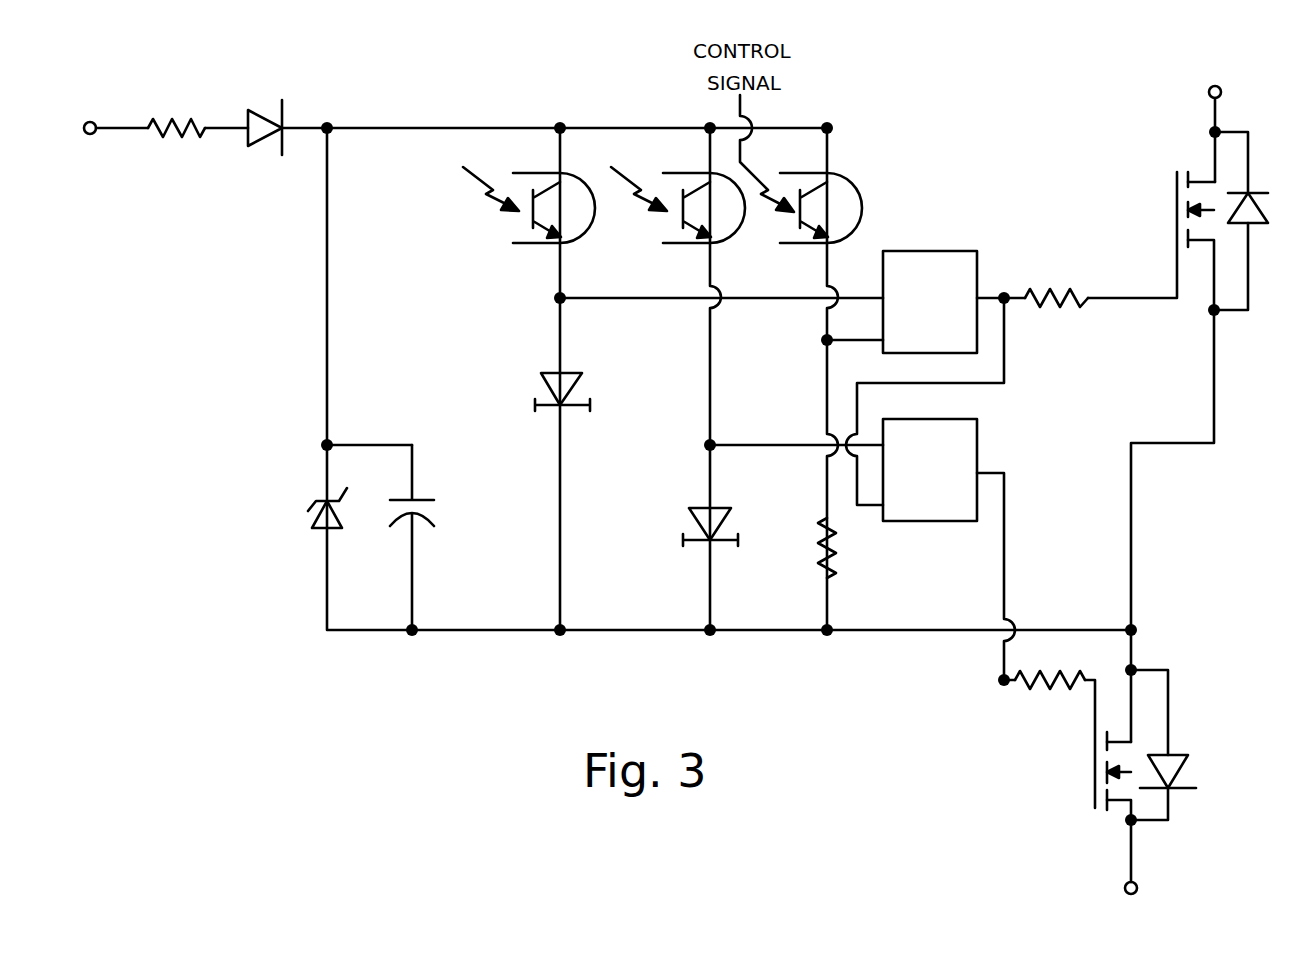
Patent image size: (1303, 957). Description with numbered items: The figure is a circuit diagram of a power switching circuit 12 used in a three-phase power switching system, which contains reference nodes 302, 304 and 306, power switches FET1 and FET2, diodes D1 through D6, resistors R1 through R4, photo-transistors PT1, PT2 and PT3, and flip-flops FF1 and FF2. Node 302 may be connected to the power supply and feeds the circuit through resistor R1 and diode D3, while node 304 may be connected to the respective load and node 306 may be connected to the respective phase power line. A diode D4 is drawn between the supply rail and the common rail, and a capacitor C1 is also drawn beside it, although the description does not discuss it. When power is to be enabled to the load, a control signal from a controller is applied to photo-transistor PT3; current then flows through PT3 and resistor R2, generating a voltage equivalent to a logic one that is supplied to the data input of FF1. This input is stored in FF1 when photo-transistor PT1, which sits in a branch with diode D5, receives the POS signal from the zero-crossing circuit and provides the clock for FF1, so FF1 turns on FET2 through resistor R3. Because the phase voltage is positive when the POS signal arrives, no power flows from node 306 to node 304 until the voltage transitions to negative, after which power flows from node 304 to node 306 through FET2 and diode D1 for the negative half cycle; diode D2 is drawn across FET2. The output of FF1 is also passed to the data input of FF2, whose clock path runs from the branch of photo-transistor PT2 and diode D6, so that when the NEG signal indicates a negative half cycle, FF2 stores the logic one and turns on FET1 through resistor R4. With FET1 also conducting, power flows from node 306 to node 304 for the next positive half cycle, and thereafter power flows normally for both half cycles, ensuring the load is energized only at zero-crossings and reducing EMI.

The reference node 302 is at (90, 121).
The resistor R1 is at (172, 118).
The diode D3 is at (258, 110).
The POS signal POS is at (480, 176).
The NEG signal NEG is at (626, 176).
The photo-transistor PT1 is at (540, 245).
The photo-transistor PT2 is at (690, 245).
The photo-transistor PT3 is at (808, 245).
The power switching circuit 12 is at (946, 112).
The flip-flop FF1 is at (937, 251).
The flip-flop FF2 is at (978, 432).
The resistor R3 is at (1066, 308).
The power switch FET2 is at (1175, 220).
The diode D2 is at (1258, 208).
The reference node 304 is at (1212, 84).
The diode D5 is at (573, 372).
The diode D6 is at (705, 508).
The resistor R2 is at (820, 548).
The diode D4 is at (318, 514).
The capacitor C1 is at (427, 500).
The resistor R4 is at (1063, 687).
The power switch FET1 is at (1092, 748).
The diode D1 is at (1183, 773).
The reference node 306 is at (1138, 883).